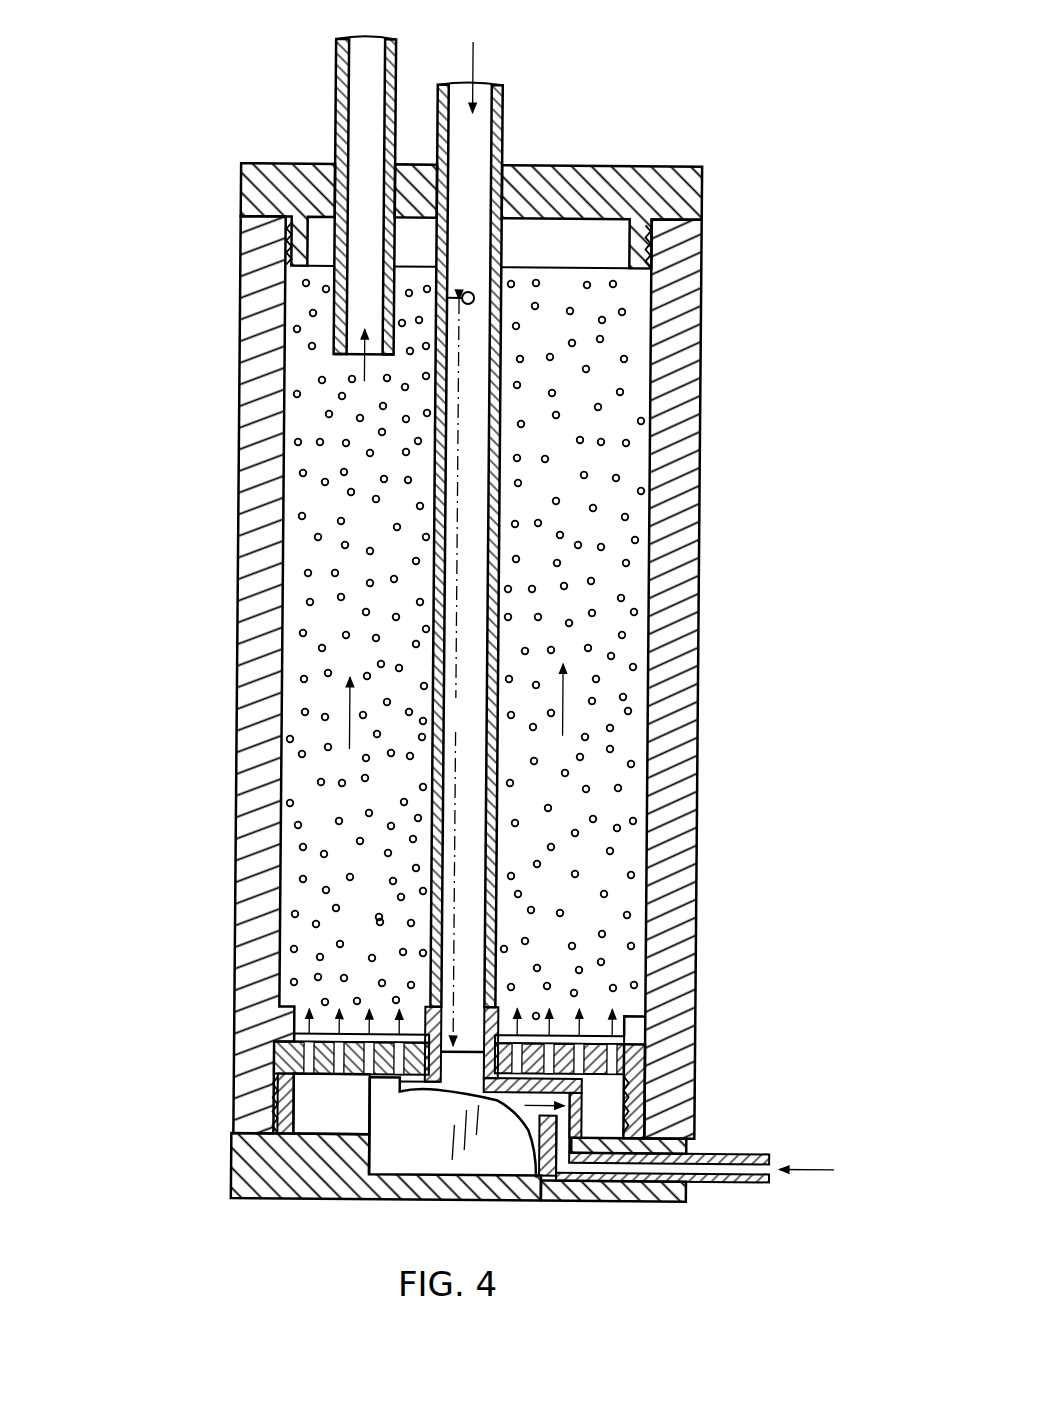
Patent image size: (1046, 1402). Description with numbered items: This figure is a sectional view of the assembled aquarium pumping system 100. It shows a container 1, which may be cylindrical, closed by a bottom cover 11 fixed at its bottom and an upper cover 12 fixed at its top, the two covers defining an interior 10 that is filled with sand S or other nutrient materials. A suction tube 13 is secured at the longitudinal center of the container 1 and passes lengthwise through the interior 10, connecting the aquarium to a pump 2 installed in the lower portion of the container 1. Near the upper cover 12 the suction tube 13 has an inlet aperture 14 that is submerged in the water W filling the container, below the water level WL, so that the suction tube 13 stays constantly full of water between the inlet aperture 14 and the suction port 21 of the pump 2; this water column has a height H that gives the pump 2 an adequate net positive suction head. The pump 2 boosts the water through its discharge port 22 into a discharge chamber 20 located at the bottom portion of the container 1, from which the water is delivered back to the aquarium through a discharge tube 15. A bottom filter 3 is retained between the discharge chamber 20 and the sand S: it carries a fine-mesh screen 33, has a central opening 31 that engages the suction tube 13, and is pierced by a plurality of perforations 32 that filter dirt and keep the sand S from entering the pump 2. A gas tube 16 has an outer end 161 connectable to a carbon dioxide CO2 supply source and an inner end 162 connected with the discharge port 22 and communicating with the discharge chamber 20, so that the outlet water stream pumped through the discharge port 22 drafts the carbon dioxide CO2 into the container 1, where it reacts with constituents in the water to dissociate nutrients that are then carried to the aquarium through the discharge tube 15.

The aquarium pumping system 100 is at (782, 109).
The container 1 is at (513, 677).
The interior 10 is at (620, 584).
The bottom cover 11 is at (573, 1195).
The upper cover 12 is at (603, 177).
The suction tube 13 is at (505, 128).
The inlet aperture 14 is at (472, 302).
The discharge tube 15 is at (342, 87).
The gas tube 16 is at (670, 1180).
The outer end 161 is at (775, 1188).
The inner end 162 is at (600, 1138).
The pump 2 is at (398, 1152).
The discharge chamber 20 is at (640, 1078).
The suction port 21 is at (630, 1040).
The discharge port 22 is at (600, 1092).
The filter 3 is at (604, 1067).
The central opening 31 is at (503, 1035).
The perforations 32 is at (282, 1055).
The screen 33 is at (322, 1035).
The water W is at (470, 58).
The water level WL is at (589, 271).
The sand S is at (605, 546).
The height of water column H is at (455, 673).
The carbon dioxide CO2 is at (817, 1210).